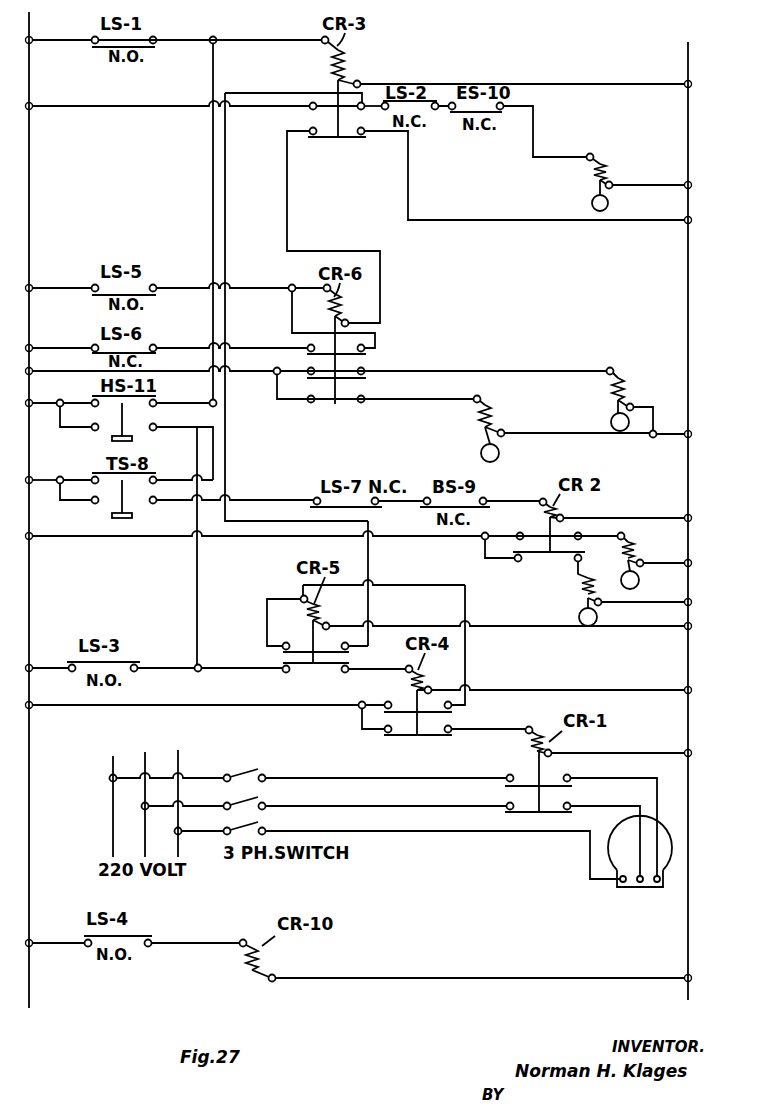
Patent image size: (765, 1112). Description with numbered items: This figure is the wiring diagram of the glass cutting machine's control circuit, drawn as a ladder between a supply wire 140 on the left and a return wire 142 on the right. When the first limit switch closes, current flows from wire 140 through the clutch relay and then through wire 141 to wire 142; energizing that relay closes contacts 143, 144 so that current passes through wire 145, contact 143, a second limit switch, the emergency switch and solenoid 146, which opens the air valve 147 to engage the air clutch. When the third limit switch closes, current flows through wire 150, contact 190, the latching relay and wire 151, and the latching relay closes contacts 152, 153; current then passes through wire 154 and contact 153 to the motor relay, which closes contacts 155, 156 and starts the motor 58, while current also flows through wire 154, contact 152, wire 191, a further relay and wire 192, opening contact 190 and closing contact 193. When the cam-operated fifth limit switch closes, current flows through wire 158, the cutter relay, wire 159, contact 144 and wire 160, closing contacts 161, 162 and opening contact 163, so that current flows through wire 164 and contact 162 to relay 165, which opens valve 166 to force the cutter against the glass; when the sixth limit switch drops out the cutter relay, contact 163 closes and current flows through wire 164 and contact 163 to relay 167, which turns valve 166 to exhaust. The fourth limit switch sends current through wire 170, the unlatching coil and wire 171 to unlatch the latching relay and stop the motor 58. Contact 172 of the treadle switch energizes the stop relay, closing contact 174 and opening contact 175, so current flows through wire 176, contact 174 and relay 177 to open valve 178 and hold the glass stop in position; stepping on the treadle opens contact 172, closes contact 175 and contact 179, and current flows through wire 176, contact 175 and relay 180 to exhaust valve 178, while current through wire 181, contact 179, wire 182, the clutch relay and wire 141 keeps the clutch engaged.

The wire 140 is at (55, 29).
The wire 141 is at (571, 85).
The wire 142 is at (692, 70).
The contact 143 is at (305, 118).
The contact 144 is at (322, 140).
The wire 145 is at (152, 108).
The solenoid 146 is at (608, 166).
The air valve 147 is at (609, 204).
The wire 150 is at (185, 671).
The wire 151 is at (598, 690).
The contact 152 is at (452, 712).
The contact 153 is at (430, 737).
The wire 154 is at (283, 705).
The contact 155 is at (509, 777).
The contact 156 is at (505, 814).
The wire 158 is at (168, 290).
The wire 159 is at (288, 222).
The wire 160 is at (568, 222).
The contact 161 is at (364, 354).
The contact 162 is at (362, 384).
The contact 163 is at (350, 403).
The wire 164 is at (82, 373).
The relay 165 is at (629, 386).
The valve 166 is at (610, 422).
The relay 167 is at (500, 420).
The wire 170 is at (201, 943).
The wire 171 is at (488, 976).
The contact 172 is at (150, 509).
The contact 174 is at (524, 538).
The contact 175 is at (560, 562).
The wire 176 is at (262, 537).
The relay 177 is at (634, 545).
The valve 178 is at (639, 580).
The contact 179 is at (158, 482).
The relay 180 is at (581, 594).
The wire 181 is at (50, 474).
The wire 182 is at (214, 440).
The contact 190 is at (332, 672).
The wire 191 is at (467, 612).
The wire 192 is at (565, 628).
The contact 193 is at (290, 653).
The motor 58 is at (635, 885).